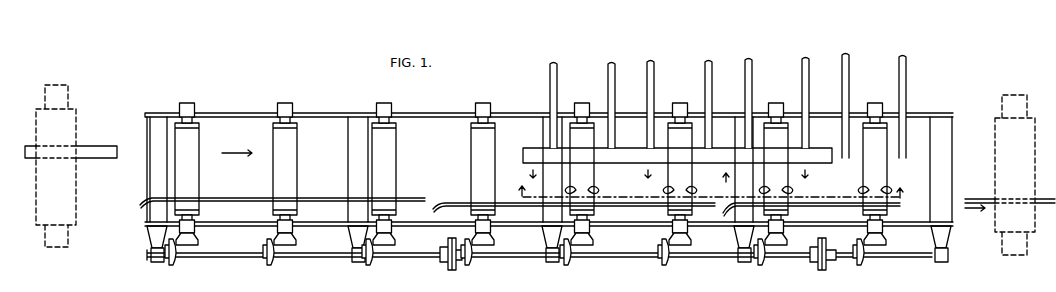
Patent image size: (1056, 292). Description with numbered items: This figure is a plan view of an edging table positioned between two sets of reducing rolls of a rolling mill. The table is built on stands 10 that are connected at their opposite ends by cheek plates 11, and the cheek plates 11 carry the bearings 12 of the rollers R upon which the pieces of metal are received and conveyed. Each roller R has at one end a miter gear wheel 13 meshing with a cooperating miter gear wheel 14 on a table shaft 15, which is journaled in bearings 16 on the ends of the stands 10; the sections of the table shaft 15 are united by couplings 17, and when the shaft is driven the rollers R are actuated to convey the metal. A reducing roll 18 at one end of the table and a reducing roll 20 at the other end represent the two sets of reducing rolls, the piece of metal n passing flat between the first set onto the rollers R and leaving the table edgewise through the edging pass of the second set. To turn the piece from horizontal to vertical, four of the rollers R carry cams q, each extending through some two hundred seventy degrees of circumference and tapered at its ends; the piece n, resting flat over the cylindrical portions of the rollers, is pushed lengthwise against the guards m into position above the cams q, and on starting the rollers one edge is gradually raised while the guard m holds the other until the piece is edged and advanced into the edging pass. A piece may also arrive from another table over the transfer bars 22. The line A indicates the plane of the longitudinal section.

The stands 10 is at (152, 213).
The cheek plates 11 is at (240, 114).
The bearings 12 is at (194, 108).
The miter gear wheel 13 is at (298, 237).
The miter gear wheel 14 is at (176, 262).
The table shaft 15 is at (318, 257).
The bearings 16 is at (359, 264).
The couplings 17 is at (447, 267).
The reducing roll 18 is at (70, 120).
The reducing roll 20 is at (997, 224).
The transfer bars 22 is at (604, 63).
The rollers R is at (199, 175).
The guard m is at (224, 197).
The piece of metal n is at (117, 180).
The cam q is at (598, 191).
The section line A is at (711, 196).